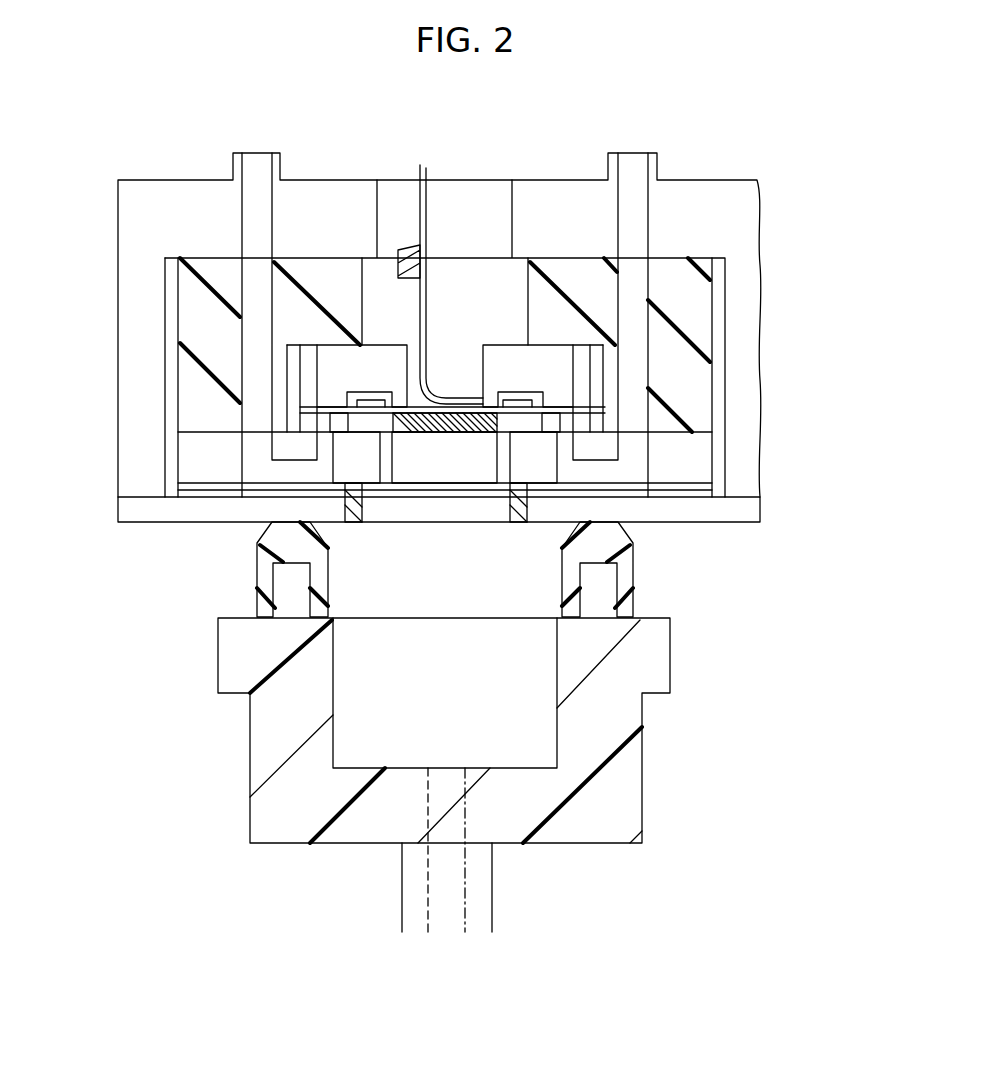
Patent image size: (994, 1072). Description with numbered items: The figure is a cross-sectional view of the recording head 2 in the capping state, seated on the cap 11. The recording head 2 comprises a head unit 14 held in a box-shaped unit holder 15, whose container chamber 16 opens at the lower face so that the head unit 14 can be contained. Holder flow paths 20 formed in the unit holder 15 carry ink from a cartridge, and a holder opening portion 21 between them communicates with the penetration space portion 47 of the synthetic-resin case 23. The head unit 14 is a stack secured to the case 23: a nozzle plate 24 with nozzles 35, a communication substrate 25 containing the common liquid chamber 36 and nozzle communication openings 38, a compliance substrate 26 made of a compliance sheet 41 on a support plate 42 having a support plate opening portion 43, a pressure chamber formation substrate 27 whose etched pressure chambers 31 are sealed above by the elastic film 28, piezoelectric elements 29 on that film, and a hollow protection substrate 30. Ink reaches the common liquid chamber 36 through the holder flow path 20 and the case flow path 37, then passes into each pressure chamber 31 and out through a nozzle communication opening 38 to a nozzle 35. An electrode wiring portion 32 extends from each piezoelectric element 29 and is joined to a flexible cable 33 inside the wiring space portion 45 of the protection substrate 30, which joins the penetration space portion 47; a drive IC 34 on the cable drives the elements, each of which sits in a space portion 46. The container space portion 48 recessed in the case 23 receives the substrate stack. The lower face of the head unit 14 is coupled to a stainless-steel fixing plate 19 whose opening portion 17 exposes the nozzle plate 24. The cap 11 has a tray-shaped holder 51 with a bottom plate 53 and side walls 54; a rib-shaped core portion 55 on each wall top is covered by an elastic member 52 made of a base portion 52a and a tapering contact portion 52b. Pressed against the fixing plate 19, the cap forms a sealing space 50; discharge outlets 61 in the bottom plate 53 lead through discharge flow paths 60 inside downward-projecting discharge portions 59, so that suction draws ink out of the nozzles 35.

The recording head 2 is at (718, 165).
The cap 11 is at (222, 798).
The head unit 14 is at (168, 274).
The unit holder 15 is at (172, 184).
The container chamber 16 is at (172, 372).
The opening portion 17 is at (525, 510).
The fixing plate 19 is at (745, 510).
The holder flow path 20 is at (640, 222).
The holder opening portion 21 is at (447, 232).
The case 23 is at (640, 320).
The nozzle plate 24 is at (445, 515).
The communication substrate 25 is at (700, 430).
The compliance substrate 26 is at (810, 448).
The pressure chamber formation substrate 27 is at (592, 410).
The elastic film 28 is at (605, 400).
The piezoelectric element 29 is at (365, 397).
The protection substrate 30 is at (300, 363).
The pressure chamber 31 is at (320, 262).
The electrode wiring portion 32 is at (470, 348).
The flexible cable 33 is at (420, 296).
The drive IC 34 is at (410, 250).
The nozzle 35 is at (352, 510).
The common liquid chamber 36 is at (265, 468).
The case flow path 37 is at (248, 308).
The nozzle communication opening 38 is at (392, 500).
The compliance sheet 41 is at (718, 468).
The support plate 42 is at (700, 487).
The support plate opening portion 43 is at (652, 512).
The wiring space portion 45 is at (439, 384).
The space portion 46 is at (505, 400).
The penetration space portion 47 is at (447, 292).
The container space portion 48 is at (300, 395).
The sealing space 50 is at (434, 662).
The holder 51 is at (645, 820).
The elastic member 52 is at (625, 545).
The base portion 52a is at (262, 565).
The contact portion 52b is at (262, 530).
The bottom plate 53 is at (390, 762).
The side wall 54 is at (275, 728).
The core portion 55 is at (288, 592).
The discharge portion 59 is at (492, 875).
The discharge flow path 60 is at (468, 905).
The discharge outlet 61 is at (428, 768).